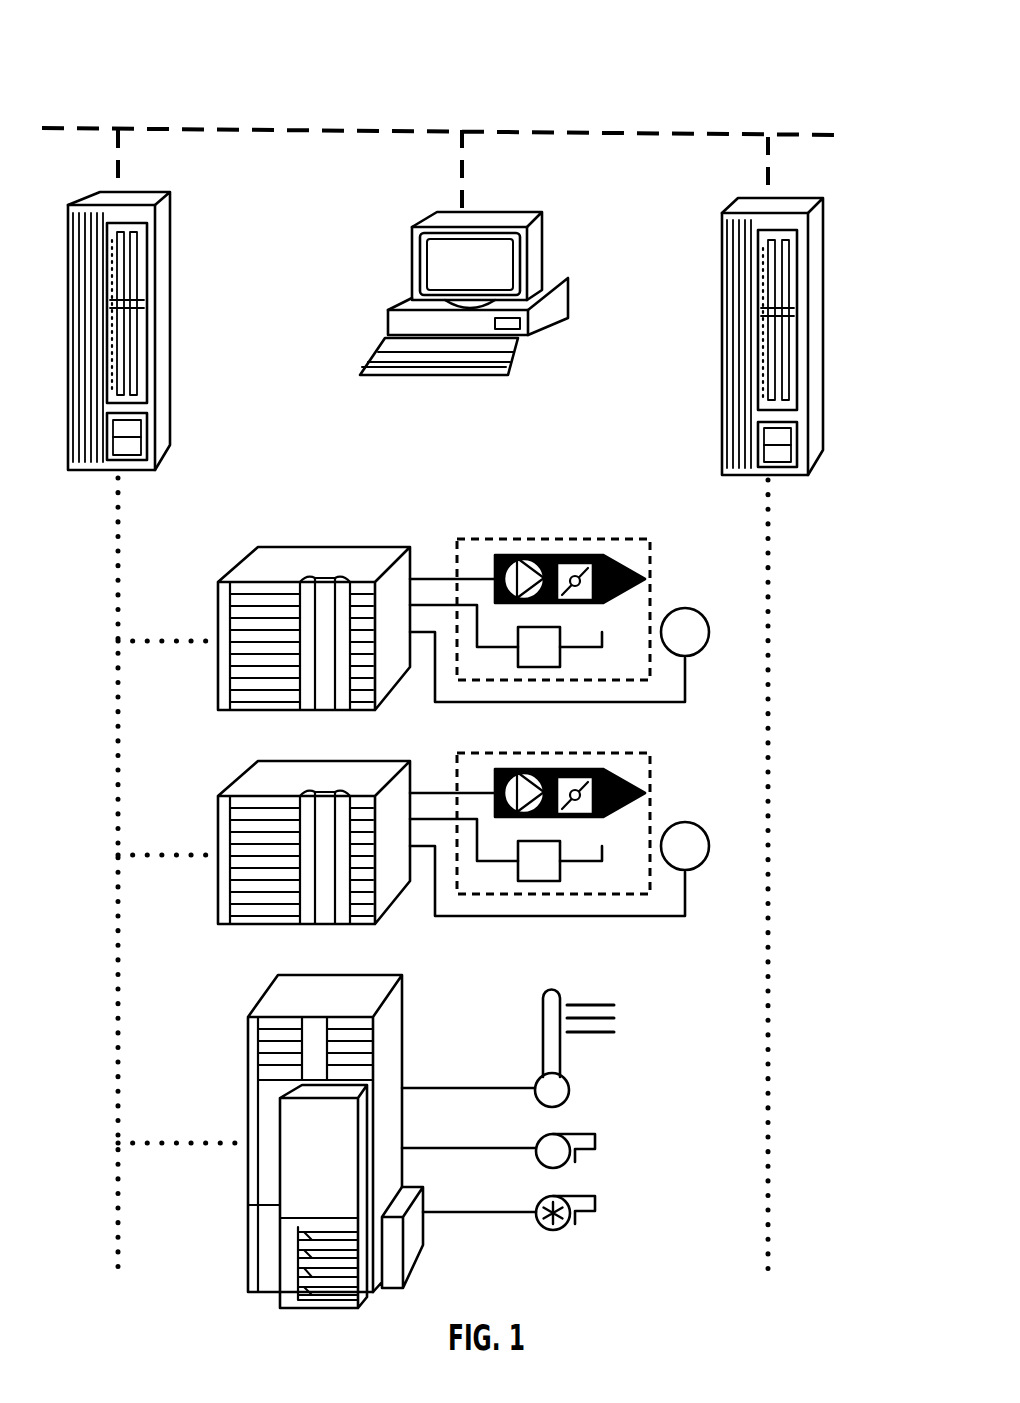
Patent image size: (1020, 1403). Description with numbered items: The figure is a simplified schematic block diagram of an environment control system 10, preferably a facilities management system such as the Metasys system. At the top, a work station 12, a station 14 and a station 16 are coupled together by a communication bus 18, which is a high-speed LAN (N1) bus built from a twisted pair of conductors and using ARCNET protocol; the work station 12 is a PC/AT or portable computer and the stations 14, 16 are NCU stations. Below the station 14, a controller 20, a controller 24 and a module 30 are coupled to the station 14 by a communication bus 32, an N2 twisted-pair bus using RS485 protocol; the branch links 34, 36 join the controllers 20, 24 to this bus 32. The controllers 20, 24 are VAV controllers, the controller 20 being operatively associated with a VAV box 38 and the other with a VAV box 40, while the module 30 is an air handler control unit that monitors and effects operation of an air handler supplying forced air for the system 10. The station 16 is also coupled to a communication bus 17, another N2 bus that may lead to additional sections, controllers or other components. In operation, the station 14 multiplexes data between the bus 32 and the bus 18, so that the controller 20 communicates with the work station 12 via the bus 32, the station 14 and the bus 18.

The environment control system 10 is at (358, 78).
The work station 12 is at (543, 243).
The station 14 is at (168, 233).
The station 16 is at (823, 241).
The communication bus 17 is at (770, 986).
The communication bus 18 is at (548, 133).
The controller 20 is at (410, 548).
The controller 24 is at (330, 818).
The module 30 is at (402, 1018).
The communication bus 32 is at (120, 976).
The communication link 34 is at (218, 640).
The communication link 36 is at (218, 854).
The VAV box 38 is at (650, 545).
The VAV box 40 is at (559, 814).